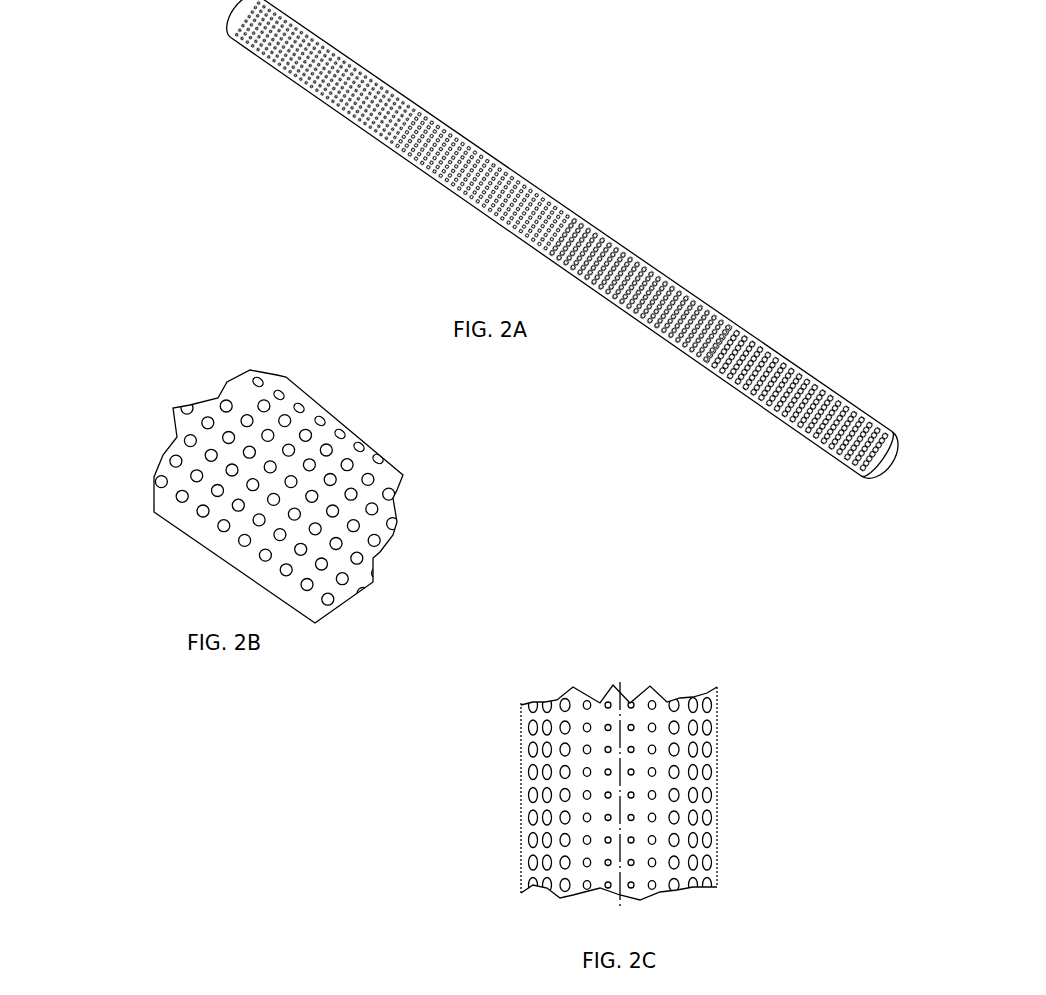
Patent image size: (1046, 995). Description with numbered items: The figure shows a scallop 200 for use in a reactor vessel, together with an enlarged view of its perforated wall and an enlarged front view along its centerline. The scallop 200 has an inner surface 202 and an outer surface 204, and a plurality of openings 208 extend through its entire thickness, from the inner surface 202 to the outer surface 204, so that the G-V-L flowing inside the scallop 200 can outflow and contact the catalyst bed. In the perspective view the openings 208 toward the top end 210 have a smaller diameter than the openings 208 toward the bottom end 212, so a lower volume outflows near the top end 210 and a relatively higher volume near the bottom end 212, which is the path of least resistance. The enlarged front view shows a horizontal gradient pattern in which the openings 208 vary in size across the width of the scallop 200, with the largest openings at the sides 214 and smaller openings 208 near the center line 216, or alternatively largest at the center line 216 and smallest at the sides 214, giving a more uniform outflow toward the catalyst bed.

In FIG. 2A, the scallop 200 is at (549, 282).
In FIG. 2A, the inner surface 202 is at (863, 498).
In FIG. 2A, the outer surface 204 is at (455, 187).
In FIG. 2B, the outer surface 204 is at (220, 477).
In FIG. 2C, the outer surface 204 is at (616, 760).
In FIG. 2B, the openings 208 is at (212, 493).
In FIG. 2C, the openings 208 is at (543, 818).
In FIG. 2A, the top end 210 is at (201, 44).
In FIG. 2A, the bottom end 212 is at (908, 420).
In FIG. 2C, the sides 214 is at (722, 718).
In FIG. 2C, the center line 216 is at (663, 760).